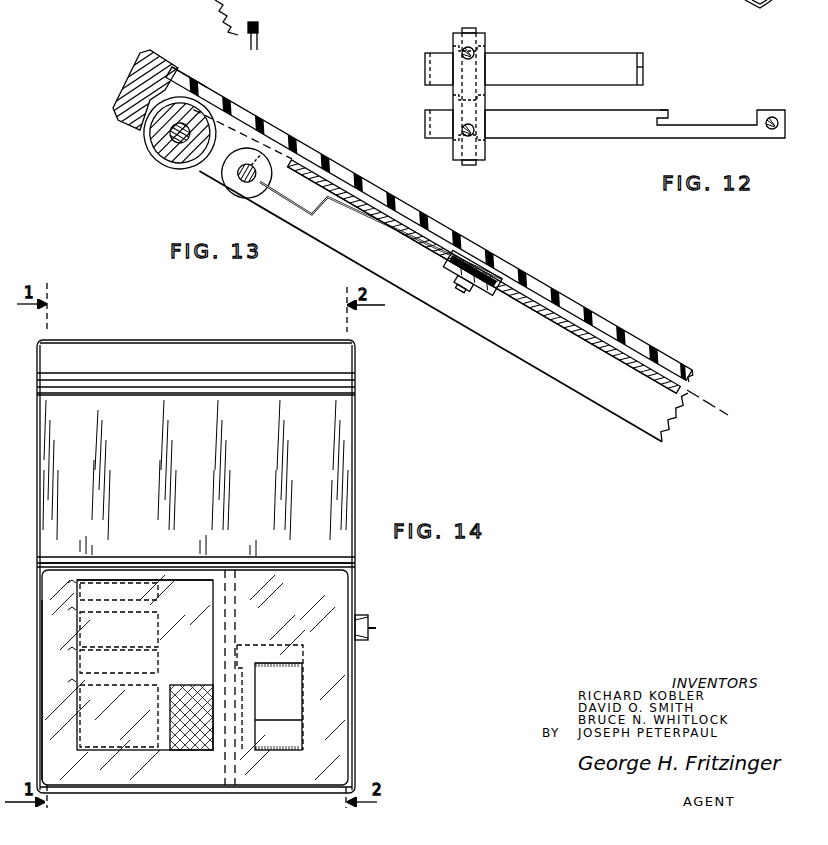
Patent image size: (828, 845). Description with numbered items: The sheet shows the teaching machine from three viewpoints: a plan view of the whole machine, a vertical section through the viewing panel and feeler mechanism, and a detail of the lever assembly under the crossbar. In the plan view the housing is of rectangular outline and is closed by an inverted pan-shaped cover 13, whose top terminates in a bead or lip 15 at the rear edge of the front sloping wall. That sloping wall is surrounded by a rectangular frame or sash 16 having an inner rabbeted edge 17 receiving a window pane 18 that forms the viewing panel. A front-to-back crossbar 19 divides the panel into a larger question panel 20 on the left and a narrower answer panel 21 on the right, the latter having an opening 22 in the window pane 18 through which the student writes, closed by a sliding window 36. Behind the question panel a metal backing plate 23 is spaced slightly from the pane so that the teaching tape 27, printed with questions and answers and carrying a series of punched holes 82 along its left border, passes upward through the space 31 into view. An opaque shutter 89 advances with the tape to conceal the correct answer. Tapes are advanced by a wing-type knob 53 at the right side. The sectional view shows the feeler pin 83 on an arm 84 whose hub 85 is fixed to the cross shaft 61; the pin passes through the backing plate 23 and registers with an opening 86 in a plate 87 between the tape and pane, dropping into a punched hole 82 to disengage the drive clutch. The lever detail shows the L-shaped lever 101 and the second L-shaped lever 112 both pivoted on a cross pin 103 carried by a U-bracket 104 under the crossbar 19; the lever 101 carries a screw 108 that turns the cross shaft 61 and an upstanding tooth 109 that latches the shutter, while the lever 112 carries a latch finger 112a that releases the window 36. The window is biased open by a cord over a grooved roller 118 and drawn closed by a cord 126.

In FIG. 14, the cover 13 is at (337, 478).
In FIG. 14, the bead or lip 15 is at (243, 563).
In FIG. 13, the rectangular frame or sash 16 is at (123, 90).
In FIG. 13, the inner rabbeted edge 17 is at (167, 61).
In FIG. 13, the window pane 18 is at (357, 175).
In FIG. 14, the window pane 18 is at (183, 575).
In FIG. 14, the crossbar 19 is at (232, 590).
In FIG. 14, the question panel 20 is at (57, 663).
In FIG. 14, the answer panel 21 is at (317, 597).
In FIG. 14, the opening 22 is at (300, 693).
In FIG. 13, the backing plate 23 is at (600, 348).
In FIG. 13, the teaching tape 27 is at (262, 137).
In FIG. 13, the space 31 is at (560, 290).
In FIG. 14, the window 36 is at (286, 694).
In FIG. 14, the wing-type knob 53 is at (378, 630).
In FIG. 13, the cross shaft 61 is at (250, 178).
In FIG. 14, the punched hole 82 is at (72, 577).
In FIG. 13, the feeler pin 83 is at (478, 258).
In FIG. 13, the arm 84 is at (443, 262).
In FIG. 13, the hub 85 is at (222, 180).
In FIG. 13, the opening 86 is at (490, 265).
In FIG. 13, the plate 87 is at (536, 300).
In FIG. 14, the opaque shutter 89 is at (187, 750).
In FIG. 12, the lever 101 is at (608, 128).
In FIG. 12, the cross pin 103 is at (470, 30).
In FIG. 12, the U-bracket 104 is at (486, 44).
In FIG. 12, the screw 108 is at (772, 130).
In FIG. 12, the upstanding tooth 109 is at (672, 113).
In FIG. 12, the second L-shaped lever 112 is at (568, 62).
In FIG. 12, the latch finger 112a is at (645, 70).
In FIG. 13, the grooved roller 118 is at (208, 25).
In FIG. 12, the cord 126 is at (795, 0).